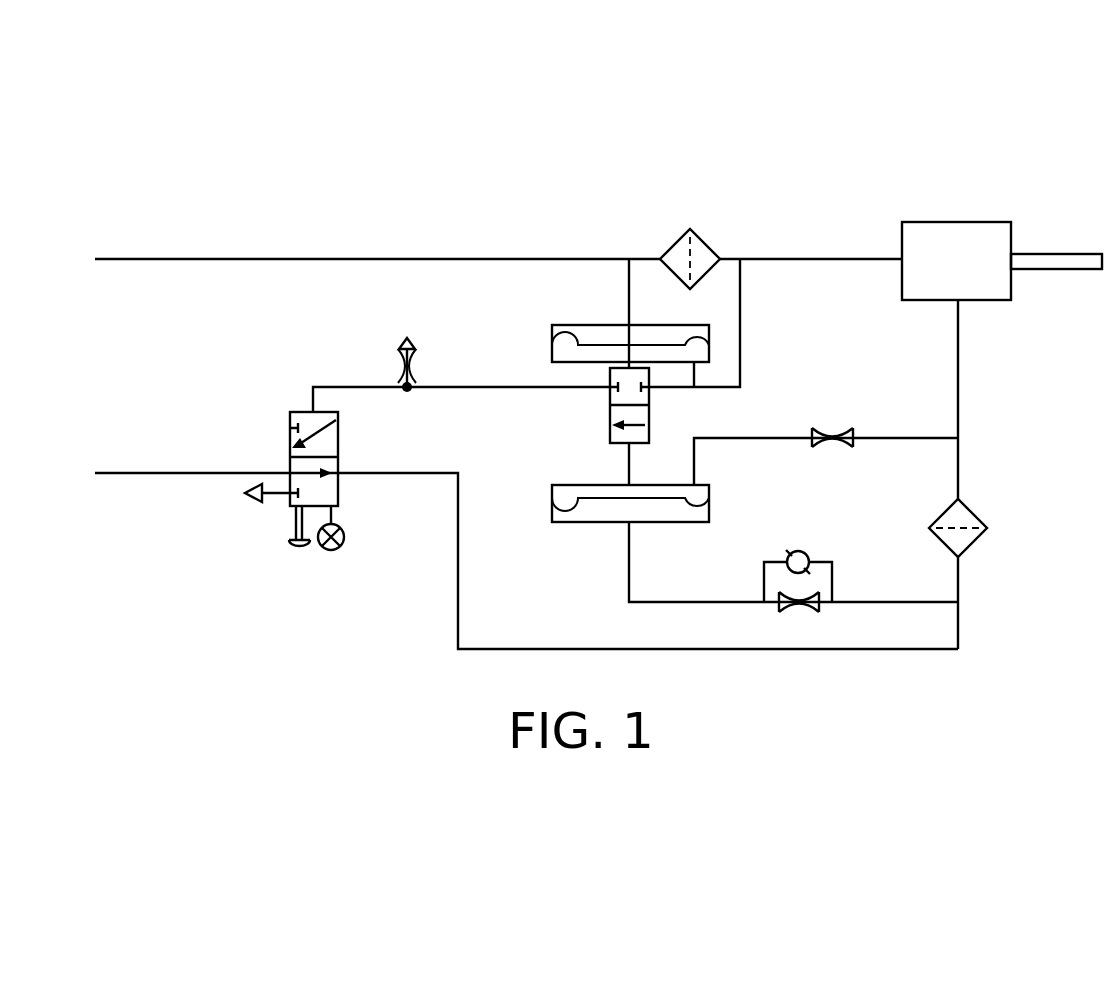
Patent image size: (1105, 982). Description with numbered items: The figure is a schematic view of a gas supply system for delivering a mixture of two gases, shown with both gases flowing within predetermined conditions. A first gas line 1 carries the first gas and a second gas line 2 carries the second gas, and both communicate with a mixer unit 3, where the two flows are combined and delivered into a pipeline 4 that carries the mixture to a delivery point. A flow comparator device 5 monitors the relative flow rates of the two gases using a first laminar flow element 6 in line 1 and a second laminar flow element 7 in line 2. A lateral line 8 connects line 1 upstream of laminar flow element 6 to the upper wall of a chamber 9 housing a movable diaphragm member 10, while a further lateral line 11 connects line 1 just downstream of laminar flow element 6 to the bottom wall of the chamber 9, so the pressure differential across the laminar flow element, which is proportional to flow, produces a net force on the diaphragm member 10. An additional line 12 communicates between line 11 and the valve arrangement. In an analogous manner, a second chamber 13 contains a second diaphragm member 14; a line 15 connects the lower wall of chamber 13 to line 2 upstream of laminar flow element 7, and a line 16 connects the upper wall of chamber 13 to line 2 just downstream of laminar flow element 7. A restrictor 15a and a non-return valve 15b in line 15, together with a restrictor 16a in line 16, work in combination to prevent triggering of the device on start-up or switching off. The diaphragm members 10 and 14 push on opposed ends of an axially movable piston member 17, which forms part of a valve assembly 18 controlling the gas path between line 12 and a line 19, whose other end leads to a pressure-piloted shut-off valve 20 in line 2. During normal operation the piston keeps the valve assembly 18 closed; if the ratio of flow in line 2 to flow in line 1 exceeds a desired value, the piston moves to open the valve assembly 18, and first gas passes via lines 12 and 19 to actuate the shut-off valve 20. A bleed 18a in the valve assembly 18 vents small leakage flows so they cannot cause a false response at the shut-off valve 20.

The first gas line 1 is at (175, 259).
The second gas line 2 is at (144, 474).
The mixer unit 3 is at (957, 222).
The pipeline 4 is at (1072, 270).
The flow comparator device 5 is at (530, 334).
The first laminar flow element 6 is at (683, 233).
The second laminar flow element 7 is at (977, 546).
The lateral line 8 is at (629, 308).
The chamber 9 is at (562, 325).
The diaphragm member 10 is at (602, 345).
The further lateral line 11 is at (740, 288).
The additional line 12 is at (667, 388).
The second chamber 13 is at (560, 522).
The second diaphragm member 14 is at (605, 498).
The line 15 is at (631, 562).
The restrictor 15a is at (797, 613).
The non-return valve 15b is at (798, 550).
The line 16 is at (918, 438).
The restrictor 16a is at (832, 428).
The piston member 17 is at (629, 458).
The valve assembly 18 is at (610, 408).
The bleed 18a is at (409, 338).
The line 19 is at (325, 387).
The pressure-piloted shut-off valve 20 is at (290, 416).